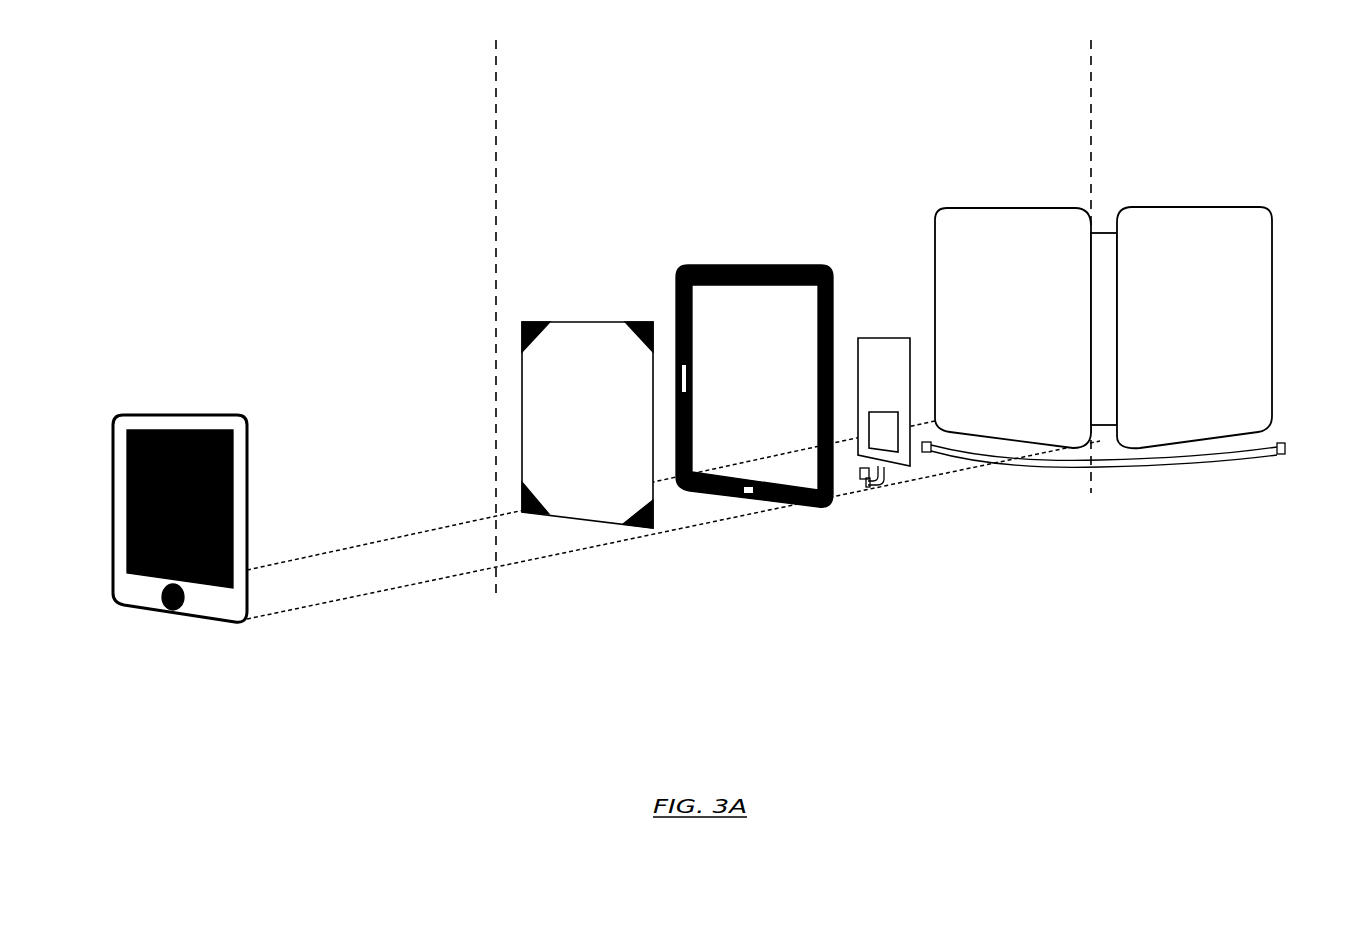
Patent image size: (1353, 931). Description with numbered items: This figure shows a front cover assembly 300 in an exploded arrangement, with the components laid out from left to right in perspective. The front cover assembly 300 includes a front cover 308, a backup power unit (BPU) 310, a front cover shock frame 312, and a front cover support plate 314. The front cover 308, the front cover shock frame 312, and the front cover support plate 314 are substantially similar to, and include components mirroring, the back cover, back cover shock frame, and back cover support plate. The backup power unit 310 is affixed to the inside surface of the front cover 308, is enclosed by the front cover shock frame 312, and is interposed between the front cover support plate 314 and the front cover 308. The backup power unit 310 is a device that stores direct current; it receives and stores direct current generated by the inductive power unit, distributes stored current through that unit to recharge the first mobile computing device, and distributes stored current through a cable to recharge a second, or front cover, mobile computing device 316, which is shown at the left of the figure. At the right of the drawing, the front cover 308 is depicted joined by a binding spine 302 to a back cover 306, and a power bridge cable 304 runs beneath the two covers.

The front cover assembly 300 is at (508, 48).
The binding spine 302 is at (1114, 217).
The power bridge cable 304 is at (1130, 483).
The back cover 306 is at (1256, 197).
The front cover 308 is at (1013, 193).
The backup power unit (BPU) 310 is at (897, 483).
The front cover shock frame 312 is at (744, 255).
The front cover support plate 314 is at (581, 535).
The second (or front cover) mobile computing device 316 is at (180, 400).